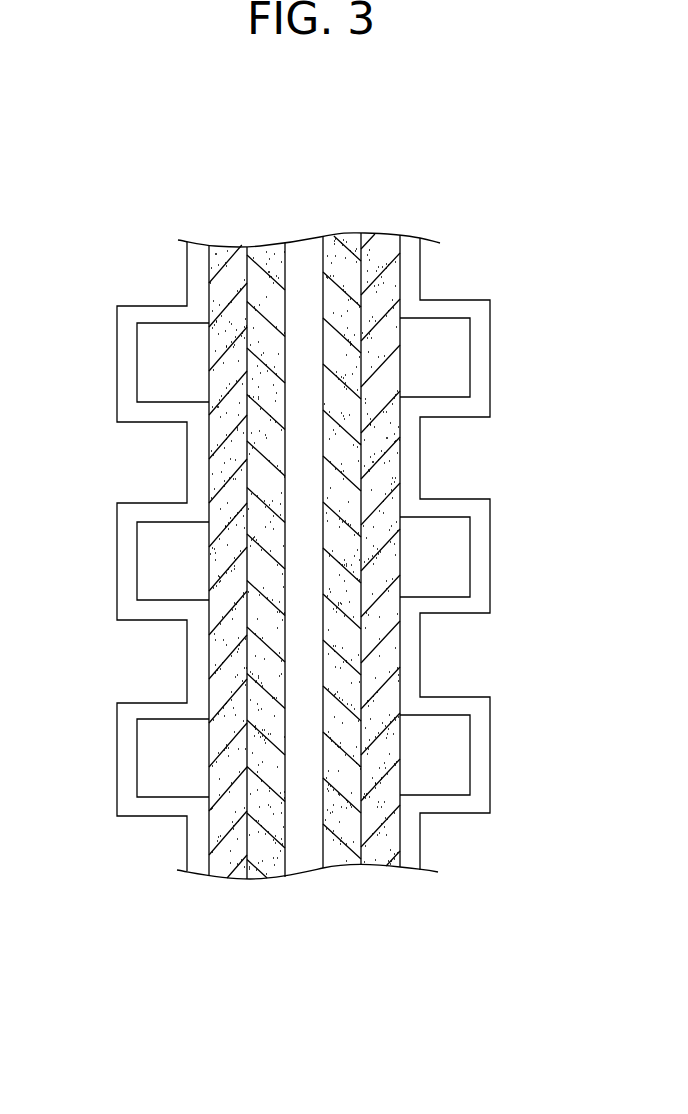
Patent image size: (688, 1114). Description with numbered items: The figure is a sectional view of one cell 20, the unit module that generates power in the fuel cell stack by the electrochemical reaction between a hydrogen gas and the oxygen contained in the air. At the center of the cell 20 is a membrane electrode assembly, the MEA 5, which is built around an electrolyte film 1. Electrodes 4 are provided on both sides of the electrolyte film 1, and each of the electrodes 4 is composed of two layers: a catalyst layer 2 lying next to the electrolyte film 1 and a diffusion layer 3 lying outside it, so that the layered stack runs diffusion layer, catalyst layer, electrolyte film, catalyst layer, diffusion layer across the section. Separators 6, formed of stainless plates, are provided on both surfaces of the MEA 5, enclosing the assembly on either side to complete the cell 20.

The electrolyte film 1 is at (308, 855).
The catalyst layer 2 is at (272, 878).
The diffusion layer 3 is at (222, 878).
The electrode 4 is at (301, 638).
The membrane electrode assembly 5 is at (383, 222).
The separator 6 is at (135, 818).
The cell 20 is at (487, 233).